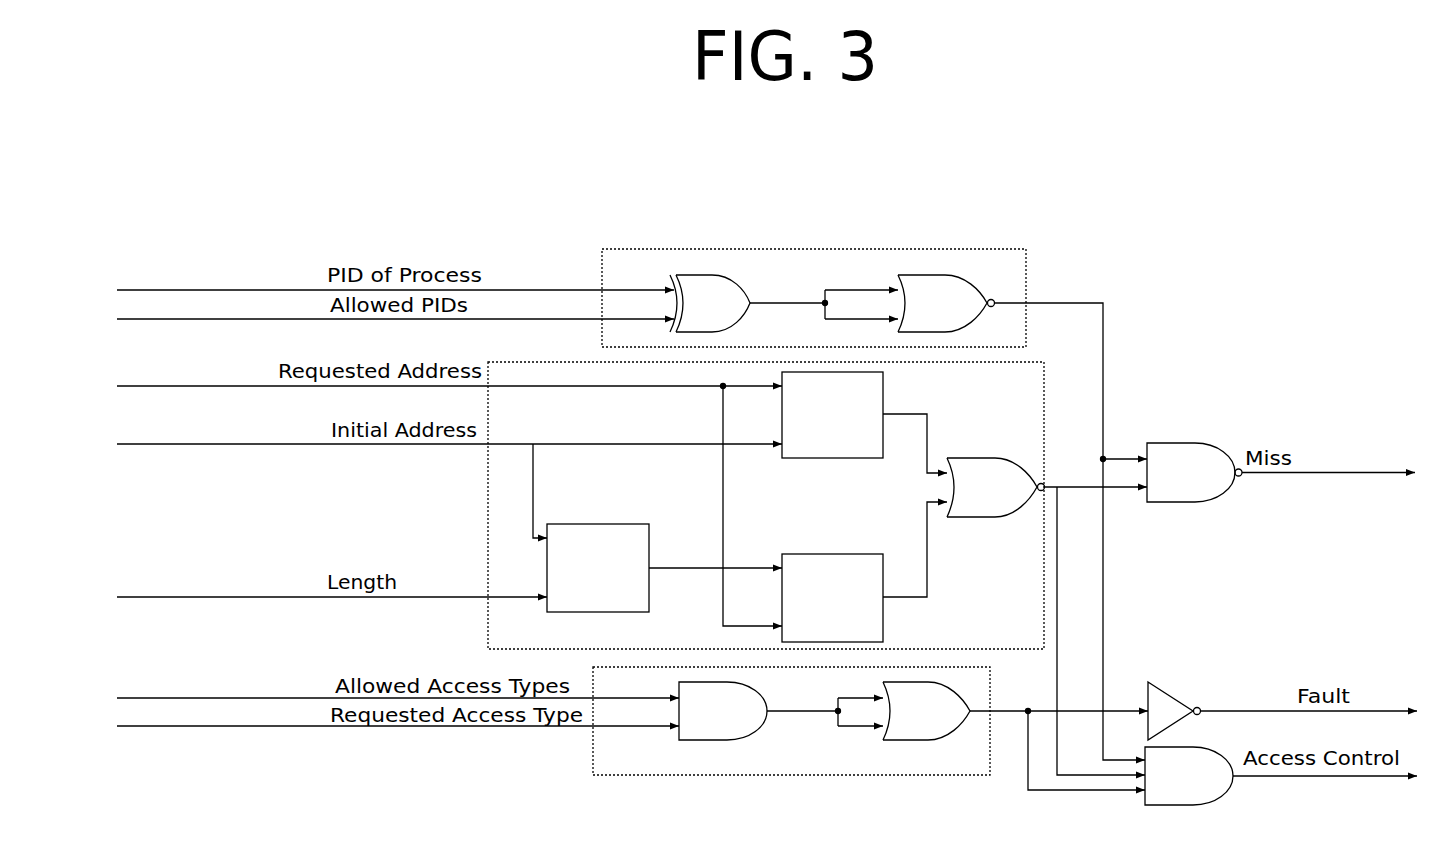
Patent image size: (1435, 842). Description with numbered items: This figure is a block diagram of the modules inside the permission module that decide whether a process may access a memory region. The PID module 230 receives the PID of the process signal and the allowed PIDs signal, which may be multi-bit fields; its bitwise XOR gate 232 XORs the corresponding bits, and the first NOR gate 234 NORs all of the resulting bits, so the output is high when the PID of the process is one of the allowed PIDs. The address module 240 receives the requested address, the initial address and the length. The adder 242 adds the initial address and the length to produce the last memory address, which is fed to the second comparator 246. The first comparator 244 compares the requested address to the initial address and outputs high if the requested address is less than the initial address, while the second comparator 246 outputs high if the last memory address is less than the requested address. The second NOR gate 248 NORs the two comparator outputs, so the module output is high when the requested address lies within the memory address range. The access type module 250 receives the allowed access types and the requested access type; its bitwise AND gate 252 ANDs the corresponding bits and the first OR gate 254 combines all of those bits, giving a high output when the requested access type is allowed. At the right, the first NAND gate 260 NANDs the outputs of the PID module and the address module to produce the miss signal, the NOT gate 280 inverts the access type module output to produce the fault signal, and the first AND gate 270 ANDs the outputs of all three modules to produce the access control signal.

The PID module 230 is at (1030, 272).
The bitwise XOR gate 232 is at (715, 298).
The first NOR gate 234 is at (953, 298).
The address module 240 is at (1045, 390).
The adder 242 is at (625, 533).
The first comparator 244 is at (845, 450).
The second comparator 246 is at (870, 571).
The second NOR gate 248 is at (993, 475).
The access type module 250 is at (993, 700).
The bitwise AND gate 252 is at (740, 725).
The first OR gate 254 is at (940, 723).
The first NAND gate 260 is at (1177, 458).
The first AND gate 270 is at (1228, 744).
The NOT gate 280 is at (1172, 700).